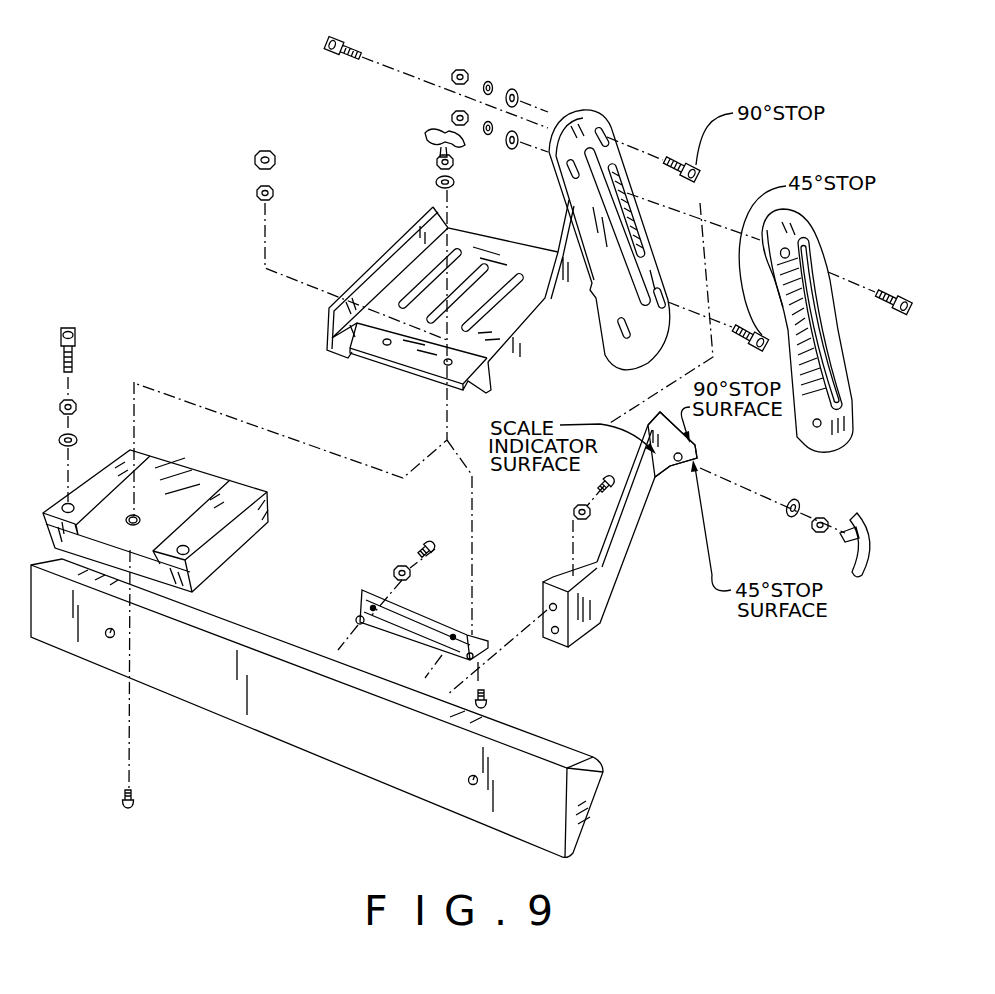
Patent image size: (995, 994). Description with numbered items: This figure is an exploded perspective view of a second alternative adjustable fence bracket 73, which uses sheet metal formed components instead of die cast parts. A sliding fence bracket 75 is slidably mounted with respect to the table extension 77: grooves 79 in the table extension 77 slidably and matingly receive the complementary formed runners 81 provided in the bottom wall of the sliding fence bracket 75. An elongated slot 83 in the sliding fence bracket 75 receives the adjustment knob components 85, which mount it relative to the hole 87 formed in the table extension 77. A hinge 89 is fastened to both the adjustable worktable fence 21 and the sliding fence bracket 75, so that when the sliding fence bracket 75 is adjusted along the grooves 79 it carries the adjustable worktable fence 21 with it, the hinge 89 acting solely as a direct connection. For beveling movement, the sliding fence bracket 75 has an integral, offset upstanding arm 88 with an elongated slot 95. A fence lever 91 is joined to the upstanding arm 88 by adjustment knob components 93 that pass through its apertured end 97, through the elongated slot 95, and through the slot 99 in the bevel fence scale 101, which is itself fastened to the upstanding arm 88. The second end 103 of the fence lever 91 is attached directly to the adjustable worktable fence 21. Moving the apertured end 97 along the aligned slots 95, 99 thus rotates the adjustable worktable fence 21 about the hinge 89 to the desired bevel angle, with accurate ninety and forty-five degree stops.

The adjustable worktable fence 21 is at (312, 713).
The adjustable fence bracket 73 is at (186, 280).
The sliding fence bracket 75 is at (450, 273).
The table extension 77 is at (172, 519).
The grooves 79 is at (158, 458).
The runners 81 is at (467, 222).
The elongated slot 83 is at (476, 248).
The adjustment knob components 85 is at (432, 130).
The hole 87 is at (112, 516).
The upstanding arm 88 is at (669, 223).
The hinge 89 is at (420, 622).
The fence lever 91 is at (655, 534).
The adjustment knob components 93 is at (864, 557).
The elongated slot 95 is at (628, 238).
The apertured end 97 is at (695, 452).
The slot 99 is at (837, 345).
The bevel fence scale 101 is at (832, 437).
The second end 103 is at (596, 610).